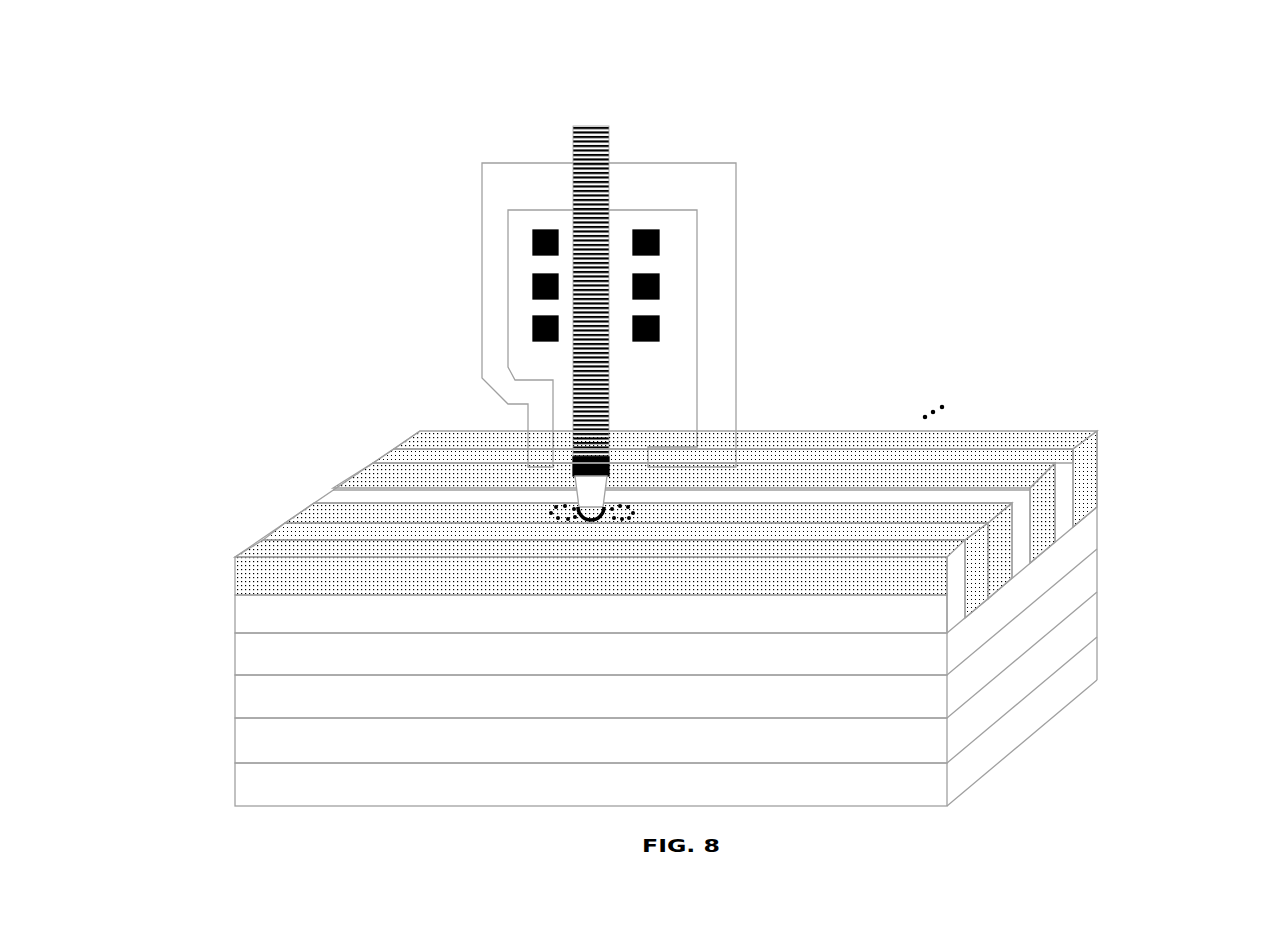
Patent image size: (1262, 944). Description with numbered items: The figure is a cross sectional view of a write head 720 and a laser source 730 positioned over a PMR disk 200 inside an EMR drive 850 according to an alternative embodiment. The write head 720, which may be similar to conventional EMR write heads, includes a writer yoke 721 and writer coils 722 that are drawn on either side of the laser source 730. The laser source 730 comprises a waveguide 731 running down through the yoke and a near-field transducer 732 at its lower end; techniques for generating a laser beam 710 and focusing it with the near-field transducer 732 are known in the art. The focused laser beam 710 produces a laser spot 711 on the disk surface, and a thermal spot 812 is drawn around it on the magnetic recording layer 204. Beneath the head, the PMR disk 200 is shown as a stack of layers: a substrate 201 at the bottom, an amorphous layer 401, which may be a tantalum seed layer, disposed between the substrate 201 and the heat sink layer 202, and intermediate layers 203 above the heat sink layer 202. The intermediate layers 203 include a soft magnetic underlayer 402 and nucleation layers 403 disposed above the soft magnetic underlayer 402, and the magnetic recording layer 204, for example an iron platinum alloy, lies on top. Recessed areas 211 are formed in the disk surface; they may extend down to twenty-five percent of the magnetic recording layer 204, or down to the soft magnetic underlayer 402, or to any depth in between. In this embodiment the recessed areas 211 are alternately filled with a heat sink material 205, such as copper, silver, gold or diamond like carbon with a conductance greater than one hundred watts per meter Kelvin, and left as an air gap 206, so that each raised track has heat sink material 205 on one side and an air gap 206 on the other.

The EMR drive 850 is at (1113, 142).
The laser source 730 is at (592, 125).
The write head 720 is at (463, 153).
The writer yoke 721 is at (717, 192).
The writer coils 722 is at (633, 328).
The waveguide 731 is at (610, 140).
The near-field transducer 732 is at (615, 477).
The laser beam 710 is at (580, 482).
The laser spot 711 is at (612, 505).
The thermal spot 812 is at (548, 513).
The recessed areas 211 is at (963, 540).
The heat sink material 205 is at (1068, 505).
The air gap 206 is at (1020, 530).
The magnetic recording layer 204 is at (666, 515).
The nucleation layers 403 is at (666, 570).
The soft magnetic underlayer 402 is at (666, 612).
The heat sink layer 202 is at (666, 655).
The amorphous layer 401 is at (666, 700).
The substrate 201 is at (1065, 752).
The intermediate layers 203 is at (624, 574).
The PMR disk 200 is at (693, 561).